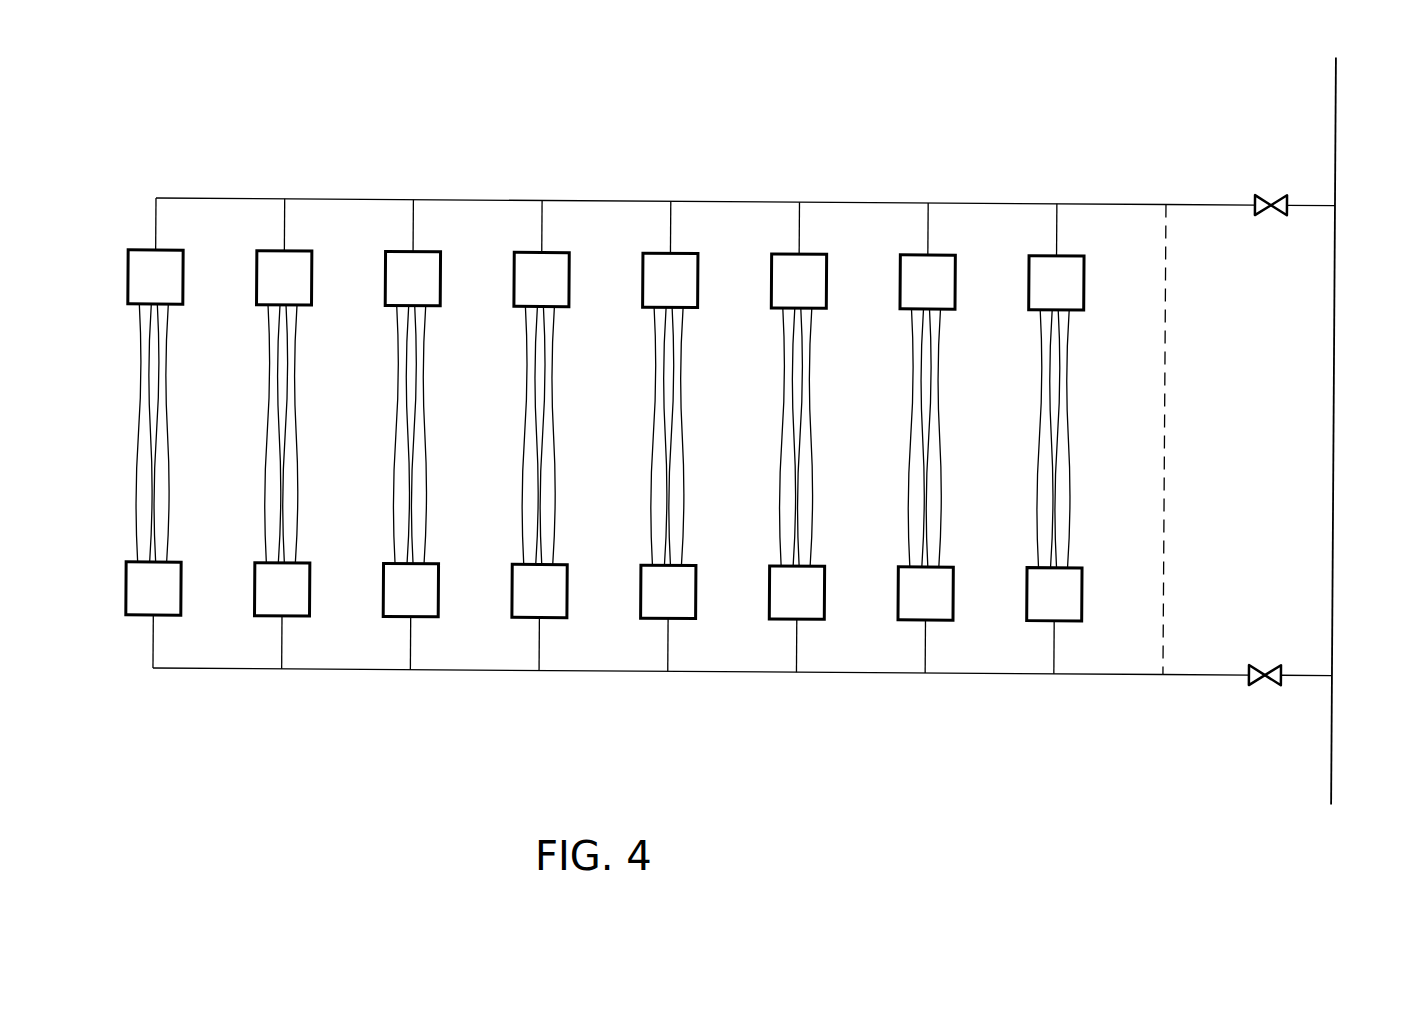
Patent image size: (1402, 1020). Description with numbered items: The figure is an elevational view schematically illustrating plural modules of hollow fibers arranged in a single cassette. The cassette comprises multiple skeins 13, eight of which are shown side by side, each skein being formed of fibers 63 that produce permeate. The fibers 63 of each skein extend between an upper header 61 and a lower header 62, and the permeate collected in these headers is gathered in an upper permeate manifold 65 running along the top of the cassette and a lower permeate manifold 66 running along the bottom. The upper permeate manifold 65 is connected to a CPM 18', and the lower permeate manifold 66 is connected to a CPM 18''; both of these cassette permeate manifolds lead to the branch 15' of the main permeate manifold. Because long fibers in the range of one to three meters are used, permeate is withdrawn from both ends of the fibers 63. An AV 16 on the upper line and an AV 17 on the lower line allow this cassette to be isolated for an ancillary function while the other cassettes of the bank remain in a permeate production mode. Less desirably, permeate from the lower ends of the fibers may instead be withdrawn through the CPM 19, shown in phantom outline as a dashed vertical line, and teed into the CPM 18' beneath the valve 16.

The skein 13 is at (439, 468).
The branch of the MPM 15' is at (1366, 431).
The AV 16 is at (1271, 196).
The AV 17 is at (1271, 688).
The CPM 18' is at (1210, 236).
The CPM 18'' is at (1206, 708).
The CPM 19 is at (1165, 390).
The upper header 61 is at (127, 279).
The lower header 62 is at (125, 589).
The fibers 63 is at (138, 430).
The upper permeate manifold 65 is at (607, 200).
The lower permeate manifold 66 is at (846, 675).